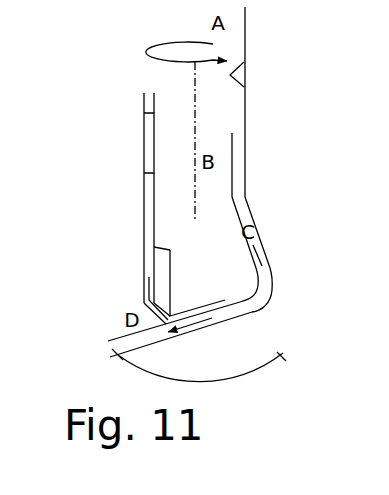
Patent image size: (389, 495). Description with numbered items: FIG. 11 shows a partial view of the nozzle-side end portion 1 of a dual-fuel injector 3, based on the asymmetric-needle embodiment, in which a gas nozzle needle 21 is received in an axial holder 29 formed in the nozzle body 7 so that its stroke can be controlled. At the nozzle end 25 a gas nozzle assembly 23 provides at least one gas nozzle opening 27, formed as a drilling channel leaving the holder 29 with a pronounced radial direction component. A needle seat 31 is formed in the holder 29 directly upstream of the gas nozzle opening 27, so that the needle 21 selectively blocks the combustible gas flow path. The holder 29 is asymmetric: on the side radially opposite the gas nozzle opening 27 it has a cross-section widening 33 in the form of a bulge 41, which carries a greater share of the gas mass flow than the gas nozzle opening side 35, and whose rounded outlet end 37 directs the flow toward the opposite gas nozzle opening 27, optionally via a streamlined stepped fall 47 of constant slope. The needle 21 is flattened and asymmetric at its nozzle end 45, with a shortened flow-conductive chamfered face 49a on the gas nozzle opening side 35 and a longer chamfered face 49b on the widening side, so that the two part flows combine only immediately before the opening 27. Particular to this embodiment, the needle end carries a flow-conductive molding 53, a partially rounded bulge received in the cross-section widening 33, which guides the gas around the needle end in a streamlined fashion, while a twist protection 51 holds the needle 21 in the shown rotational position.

The nozzle-side end portion 1 is at (277, 228).
The fuel injector 3 is at (145, 92).
The nozzle body 7 is at (286, 293).
The gas nozzle needle 21 is at (184, 124).
The gas nozzle assembly 23 is at (113, 345).
The nozzle end 25 is at (236, 366).
The gas nozzle opening 27 is at (146, 338).
The axial holder 29 is at (244, 62).
The needle seat 31 is at (257, 356).
The cross-section widening 33 is at (253, 218).
The gas nozzle opening side 35 is at (152, 263).
The outlet end 37 is at (240, 302).
The bulge 41 is at (264, 268).
The nozzle end of the gas nozzle needle 45 is at (168, 249).
The stepped fall 47 is at (195, 310).
The flow-conductive chamfered face 49a is at (147, 301).
The flow-conductive chamfered face 49b is at (257, 356).
The twist protection 51 is at (147, 153).
The flow-conductive molding 53 is at (237, 280).